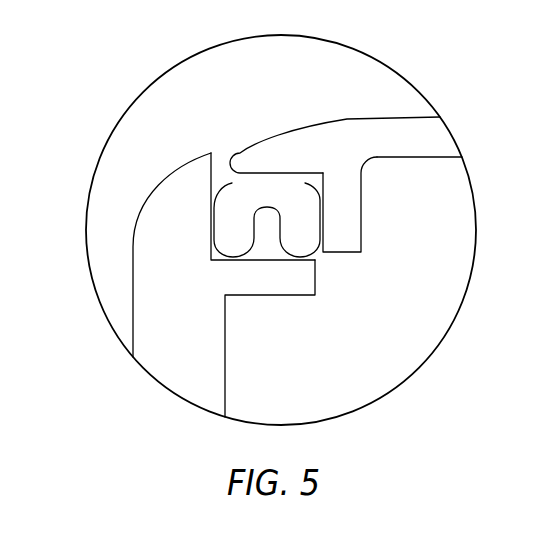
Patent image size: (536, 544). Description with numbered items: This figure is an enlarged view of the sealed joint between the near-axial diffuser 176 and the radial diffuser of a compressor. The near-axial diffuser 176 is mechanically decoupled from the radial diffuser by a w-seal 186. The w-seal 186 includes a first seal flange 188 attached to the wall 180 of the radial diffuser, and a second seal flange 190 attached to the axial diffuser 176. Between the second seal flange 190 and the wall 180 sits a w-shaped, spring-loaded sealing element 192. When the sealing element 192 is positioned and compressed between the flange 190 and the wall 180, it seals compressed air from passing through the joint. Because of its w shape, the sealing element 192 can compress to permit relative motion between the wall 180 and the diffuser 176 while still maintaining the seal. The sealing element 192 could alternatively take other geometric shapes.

The near-axial diffuser 176 is at (350, 120).
The wall 180 is at (148, 298).
The w-seal 186 is at (226, 136).
The first seal flange 188 is at (270, 296).
The second seal flange 190 is at (363, 213).
The w-shaped sealing element 192 is at (215, 189).